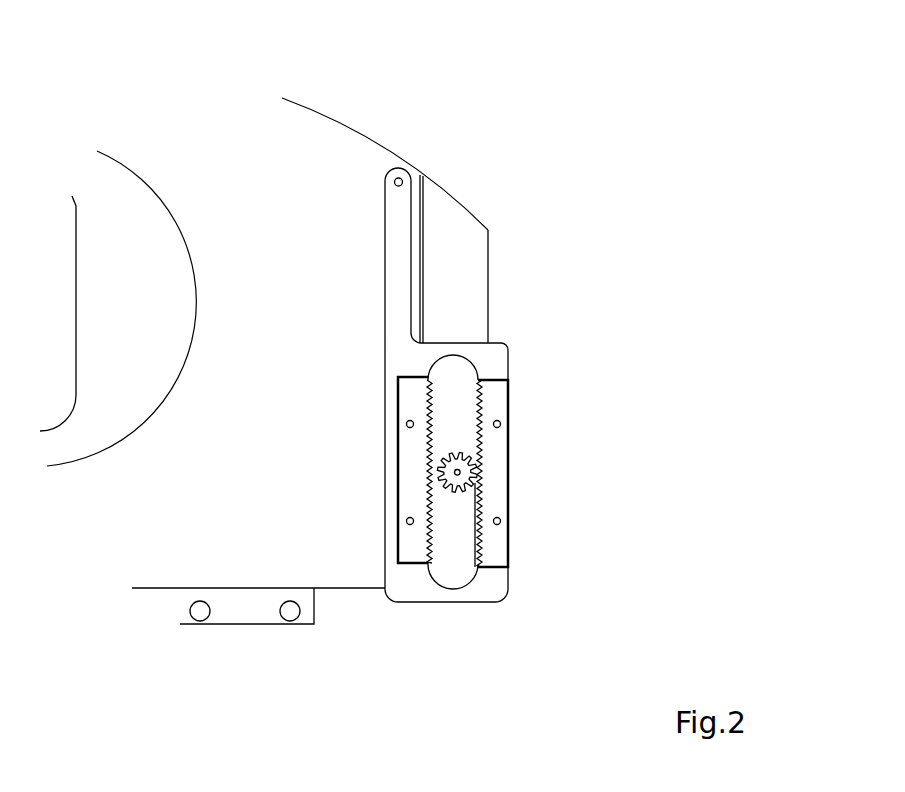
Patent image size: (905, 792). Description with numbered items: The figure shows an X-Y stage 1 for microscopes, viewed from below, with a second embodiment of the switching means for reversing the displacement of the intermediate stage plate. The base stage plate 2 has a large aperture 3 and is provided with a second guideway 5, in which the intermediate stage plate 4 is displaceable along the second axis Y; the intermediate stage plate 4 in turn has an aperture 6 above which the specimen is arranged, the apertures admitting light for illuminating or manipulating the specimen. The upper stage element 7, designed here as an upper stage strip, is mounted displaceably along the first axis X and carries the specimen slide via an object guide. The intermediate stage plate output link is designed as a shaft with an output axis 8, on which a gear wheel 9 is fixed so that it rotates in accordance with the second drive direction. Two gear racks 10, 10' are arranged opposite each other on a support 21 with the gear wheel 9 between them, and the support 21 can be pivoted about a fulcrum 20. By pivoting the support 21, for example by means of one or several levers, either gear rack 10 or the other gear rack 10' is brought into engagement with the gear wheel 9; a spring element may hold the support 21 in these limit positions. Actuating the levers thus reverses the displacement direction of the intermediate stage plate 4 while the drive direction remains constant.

The X-Y stage 1 is at (562, 114).
The base stage plate 2 is at (330, 148).
The aperture 3 is at (113, 155).
The intermediate stage plate 4 is at (135, 207).
The second guideway 5 is at (421, 191).
The aperture 6 is at (70, 190).
The upper stage element 7 is at (258, 609).
The output axis 8 is at (460, 471).
The gear wheel 9 is at (470, 482).
The gear rack 10 is at (546, 461).
The gear rack 10' is at (511, 475).
The fulcrum 20 is at (401, 177).
The support 21 is at (488, 352).